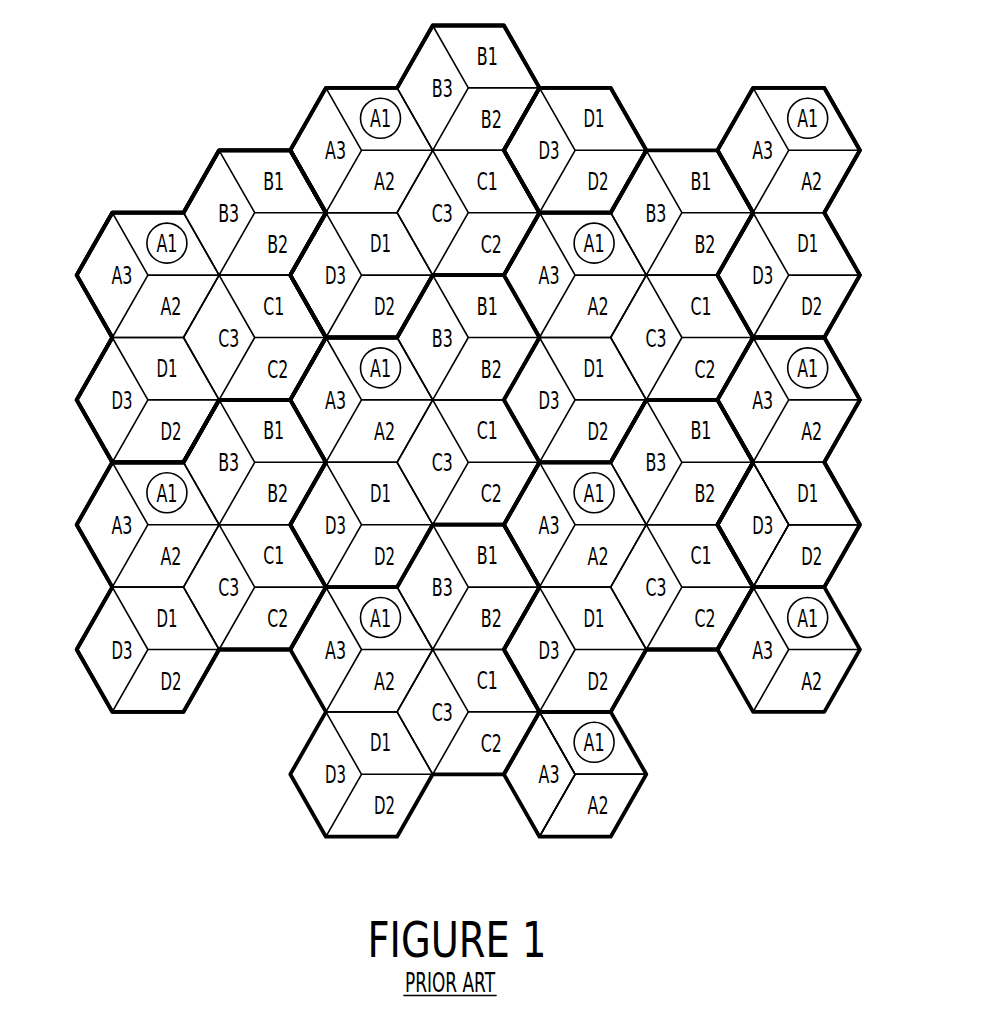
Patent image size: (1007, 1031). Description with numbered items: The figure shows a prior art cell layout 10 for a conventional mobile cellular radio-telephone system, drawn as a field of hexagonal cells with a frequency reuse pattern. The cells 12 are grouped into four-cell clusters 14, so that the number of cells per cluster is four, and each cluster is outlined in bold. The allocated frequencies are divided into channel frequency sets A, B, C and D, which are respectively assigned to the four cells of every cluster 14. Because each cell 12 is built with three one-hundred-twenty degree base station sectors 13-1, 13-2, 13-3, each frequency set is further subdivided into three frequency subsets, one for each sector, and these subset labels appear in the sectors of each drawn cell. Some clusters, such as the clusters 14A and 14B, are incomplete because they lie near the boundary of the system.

The cell layout 10 is at (649, 50).
The cell 12 is at (143, 227).
The base station sector 13-1 is at (805, 470).
The base station sector 13-2 is at (837, 540).
The base station sector 13-3 is at (760, 502).
The 4-cell cluster 14 is at (428, 10).
The incomplete cluster 14A is at (590, 87).
The incomplete cluster 14B is at (843, 360).